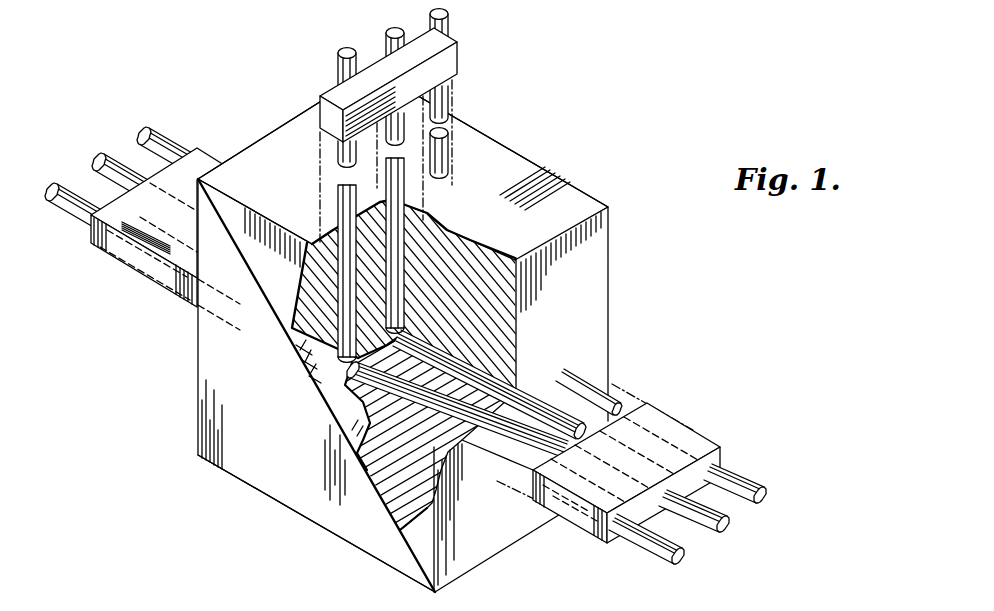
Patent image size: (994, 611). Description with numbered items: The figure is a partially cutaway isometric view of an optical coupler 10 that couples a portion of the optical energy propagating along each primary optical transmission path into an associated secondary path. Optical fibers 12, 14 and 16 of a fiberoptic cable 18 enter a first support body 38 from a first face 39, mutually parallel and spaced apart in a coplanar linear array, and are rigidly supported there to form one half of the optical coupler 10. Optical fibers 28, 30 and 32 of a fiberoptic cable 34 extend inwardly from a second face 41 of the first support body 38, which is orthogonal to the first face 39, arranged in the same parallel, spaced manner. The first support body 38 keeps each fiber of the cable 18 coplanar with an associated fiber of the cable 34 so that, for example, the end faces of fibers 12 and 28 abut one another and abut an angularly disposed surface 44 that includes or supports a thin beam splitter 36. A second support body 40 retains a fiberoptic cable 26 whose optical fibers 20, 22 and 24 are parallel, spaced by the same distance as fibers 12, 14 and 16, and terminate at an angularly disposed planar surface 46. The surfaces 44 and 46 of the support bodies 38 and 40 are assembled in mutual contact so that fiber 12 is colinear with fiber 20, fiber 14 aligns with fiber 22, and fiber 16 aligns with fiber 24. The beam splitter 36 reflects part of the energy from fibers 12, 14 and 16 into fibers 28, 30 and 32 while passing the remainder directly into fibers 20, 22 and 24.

The optical coupler 10 is at (566, 194).
The optical fiber 12 is at (661, 550).
The optical fiber 14 is at (714, 527).
The optical fiber 16 is at (745, 483).
The fiberoptic cable 18 is at (652, 455).
The optical fiber 20 is at (55, 197).
The optical fiber 22 is at (109, 152).
The optical fiber 24 is at (155, 129).
The fiberoptic cable 26 is at (213, 147).
The optical fiber 28 is at (337, 198).
The optical fiber 30 is at (405, 180).
The optical fiber 32 is at (448, 143).
The fiberoptic cable 34 is at (458, 62).
The beam splitter 36 is at (330, 410).
The first support body 38 is at (592, 264).
The first face 39 is at (483, 547).
The second support body 40 is at (224, 400).
The second face 41 is at (517, 162).
The angularly disposed surface 44 is at (226, 238).
The angularly disposed planar surface 46 is at (327, 384).